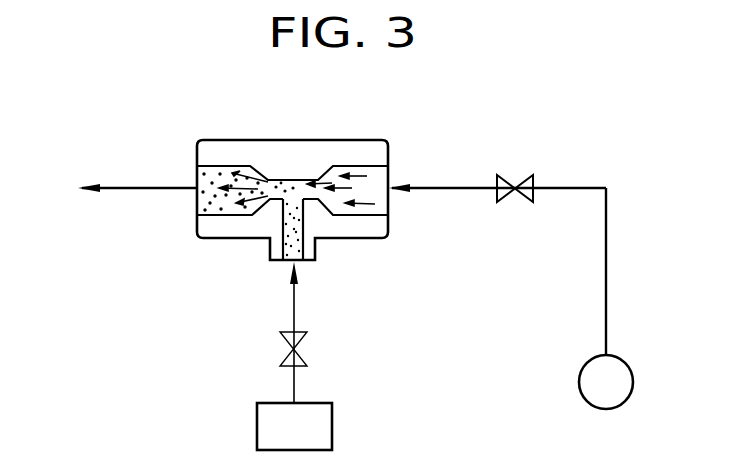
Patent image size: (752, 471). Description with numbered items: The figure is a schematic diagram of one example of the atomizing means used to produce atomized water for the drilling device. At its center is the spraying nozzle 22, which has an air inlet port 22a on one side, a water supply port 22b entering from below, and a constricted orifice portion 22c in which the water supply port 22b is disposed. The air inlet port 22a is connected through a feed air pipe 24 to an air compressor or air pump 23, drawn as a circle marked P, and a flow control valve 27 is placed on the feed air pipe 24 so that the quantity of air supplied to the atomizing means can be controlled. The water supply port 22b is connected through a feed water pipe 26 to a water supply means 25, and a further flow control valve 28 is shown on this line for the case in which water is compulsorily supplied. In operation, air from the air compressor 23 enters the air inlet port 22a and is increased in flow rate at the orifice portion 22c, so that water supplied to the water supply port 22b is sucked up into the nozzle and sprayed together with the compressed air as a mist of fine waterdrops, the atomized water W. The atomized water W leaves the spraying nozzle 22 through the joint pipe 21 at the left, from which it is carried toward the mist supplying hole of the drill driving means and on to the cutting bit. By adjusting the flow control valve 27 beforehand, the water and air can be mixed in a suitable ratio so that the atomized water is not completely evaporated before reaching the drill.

The joint pipe 21 is at (137, 188).
The spraying nozzle 22 is at (327, 140).
The air inlet port 22a is at (368, 182).
The water supply port 22b is at (292, 203).
The orifice portion 22c is at (287, 168).
The air compressor 23 is at (581, 385).
The feed air pipe 24 is at (458, 192).
The water supply means 25 is at (312, 437).
The feed water pipe 26 is at (294, 313).
The flow control valve 27 is at (504, 175).
The flow control valve 28 is at (280, 338).
The atomized water W is at (207, 207).